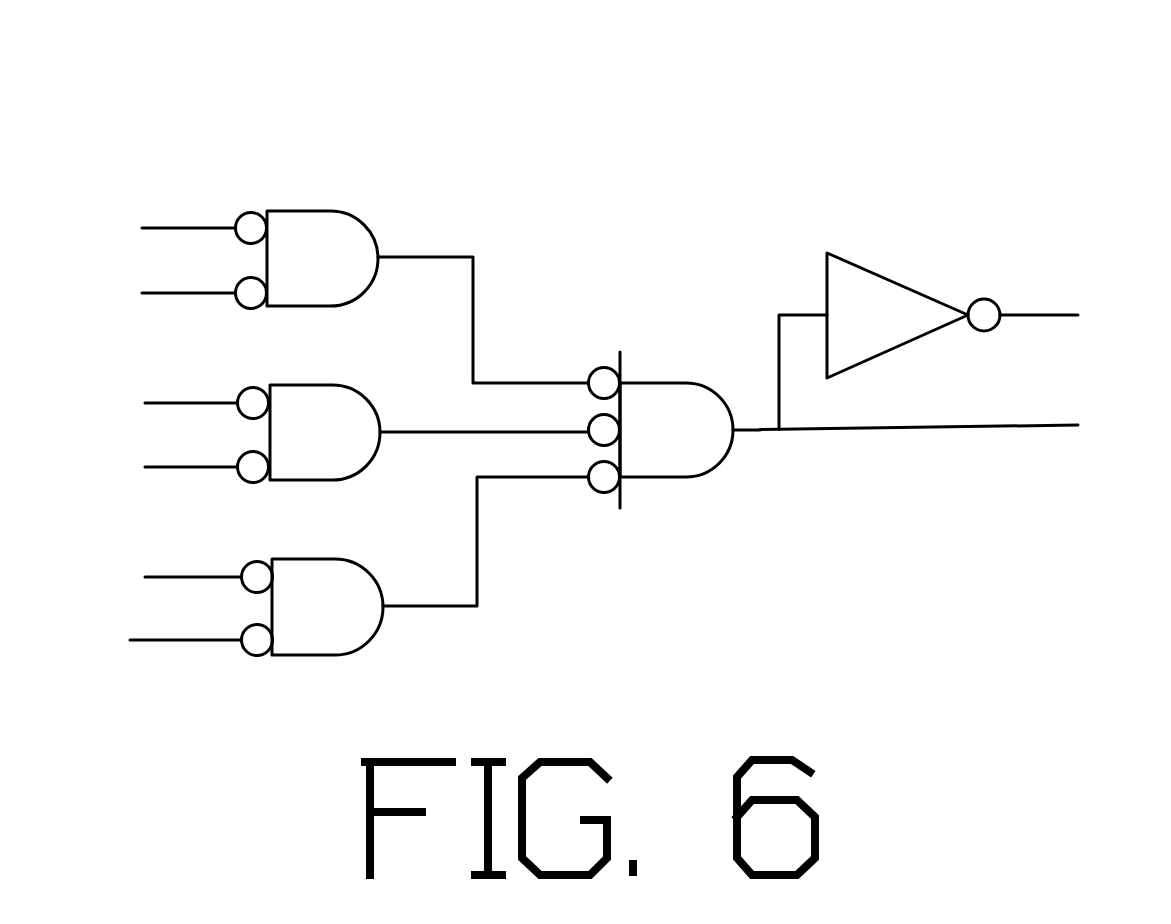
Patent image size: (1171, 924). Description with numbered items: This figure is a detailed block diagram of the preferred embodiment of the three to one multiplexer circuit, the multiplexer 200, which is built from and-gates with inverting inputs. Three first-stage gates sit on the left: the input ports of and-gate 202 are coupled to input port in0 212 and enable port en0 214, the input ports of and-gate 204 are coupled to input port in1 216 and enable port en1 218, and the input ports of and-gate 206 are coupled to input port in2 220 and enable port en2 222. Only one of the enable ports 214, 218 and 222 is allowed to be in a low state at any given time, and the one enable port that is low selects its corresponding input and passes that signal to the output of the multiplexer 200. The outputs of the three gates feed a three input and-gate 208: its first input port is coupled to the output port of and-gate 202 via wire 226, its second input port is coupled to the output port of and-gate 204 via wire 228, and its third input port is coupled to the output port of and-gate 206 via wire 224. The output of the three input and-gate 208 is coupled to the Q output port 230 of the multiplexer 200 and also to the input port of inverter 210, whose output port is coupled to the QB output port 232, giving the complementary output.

The 3:1 MUX 200 is at (808, 107).
The and-gate 202 is at (312, 227).
The and-gate 204 is at (317, 417).
The and-gate 206 is at (335, 623).
The three input and-gate 208 is at (651, 397).
The inverter 210 is at (840, 287).
The input port in0 212 is at (173, 228).
The input port en0 214 is at (173, 293).
The input port in1 216 is at (207, 403).
The input port en1 218 is at (175, 467).
The input port in2 220 is at (193, 577).
The input port en2 222 is at (210, 640).
The wire 224 is at (477, 590).
The wire 226 is at (473, 257).
The wire 228 is at (475, 432).
The Q output port 230 is at (953, 427).
The QB output port 232 is at (1048, 315).